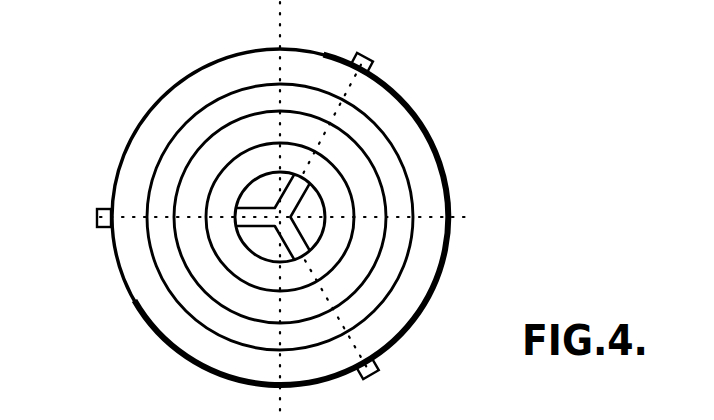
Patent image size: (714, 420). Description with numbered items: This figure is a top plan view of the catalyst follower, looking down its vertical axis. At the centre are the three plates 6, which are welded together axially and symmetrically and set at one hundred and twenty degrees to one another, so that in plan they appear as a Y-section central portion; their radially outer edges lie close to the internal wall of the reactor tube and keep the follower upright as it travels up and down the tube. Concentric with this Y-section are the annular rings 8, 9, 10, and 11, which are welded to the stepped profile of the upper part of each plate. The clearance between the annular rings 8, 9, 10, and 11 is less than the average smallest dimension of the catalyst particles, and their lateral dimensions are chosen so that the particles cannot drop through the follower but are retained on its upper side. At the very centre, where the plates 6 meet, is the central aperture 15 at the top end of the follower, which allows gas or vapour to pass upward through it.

The plates 6 is at (100, 210).
The annular ring 8 is at (413, 270).
The annular ring 9 is at (400, 232).
The annular ring 10 is at (365, 188).
The annular ring 11 is at (327, 190).
The central aperture 15 is at (255, 193).